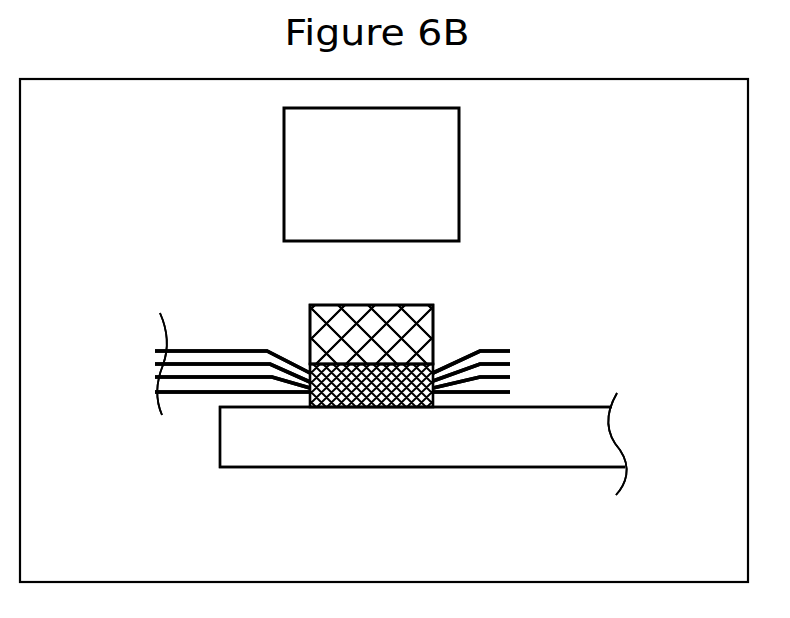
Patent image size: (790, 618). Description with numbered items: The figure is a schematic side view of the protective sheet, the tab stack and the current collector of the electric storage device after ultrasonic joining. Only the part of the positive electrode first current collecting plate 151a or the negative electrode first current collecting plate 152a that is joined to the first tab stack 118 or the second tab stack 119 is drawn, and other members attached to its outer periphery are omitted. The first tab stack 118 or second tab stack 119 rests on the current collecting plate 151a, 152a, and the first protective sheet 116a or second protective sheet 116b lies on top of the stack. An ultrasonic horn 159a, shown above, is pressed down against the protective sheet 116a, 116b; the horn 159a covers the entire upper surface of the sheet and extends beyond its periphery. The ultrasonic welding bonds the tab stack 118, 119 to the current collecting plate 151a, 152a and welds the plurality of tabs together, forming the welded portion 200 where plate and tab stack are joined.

The ultrasonic horn 159a is at (445, 177).
The first protective sheet 116a is at (320, 329).
The second protective sheet 116b is at (371, 334).
The first tab stack 118 is at (520, 400).
The second tab stack 119 is at (332, 364).
The positive electrode first current collecting plate 151a is at (253, 454).
The negative electrode first current collecting plate 152a is at (423, 444).
The welded portion 200 is at (400, 407).